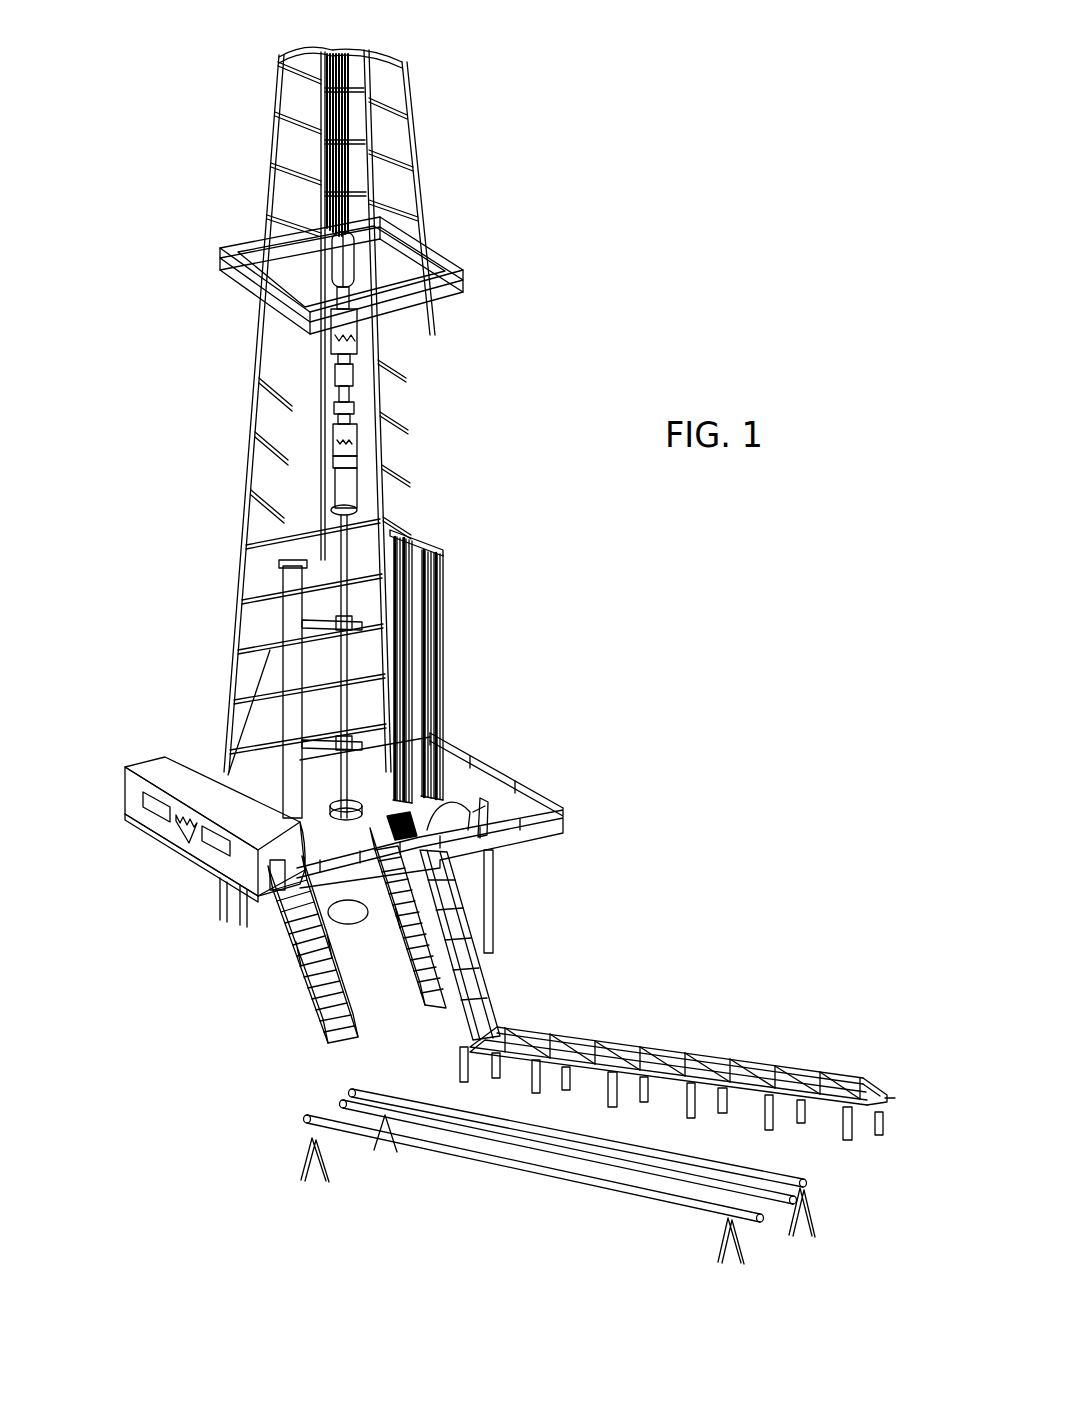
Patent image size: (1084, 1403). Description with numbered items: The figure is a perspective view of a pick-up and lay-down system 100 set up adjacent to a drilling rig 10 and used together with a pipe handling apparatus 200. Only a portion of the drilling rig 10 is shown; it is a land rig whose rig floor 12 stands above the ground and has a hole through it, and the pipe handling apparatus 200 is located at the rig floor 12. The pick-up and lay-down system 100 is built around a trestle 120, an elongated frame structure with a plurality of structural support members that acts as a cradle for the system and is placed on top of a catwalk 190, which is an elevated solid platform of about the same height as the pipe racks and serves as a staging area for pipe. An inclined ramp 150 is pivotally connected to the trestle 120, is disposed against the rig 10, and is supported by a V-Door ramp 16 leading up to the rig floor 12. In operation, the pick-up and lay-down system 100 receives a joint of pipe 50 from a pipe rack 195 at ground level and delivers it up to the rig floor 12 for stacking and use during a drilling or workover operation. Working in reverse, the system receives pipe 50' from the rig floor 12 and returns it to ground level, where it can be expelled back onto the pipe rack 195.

The drilling rig 10 is at (120, 332).
The rig floor 12 is at (467, 780).
The V-Door ramp 16 is at (473, 977).
The joint of pipe 50 is at (555, 1162).
The pipe 50' is at (458, 666).
The pick-up and lay-down system 100 is at (609, 993).
The trestle 120 is at (863, 1083).
The inclined ramp 150 is at (453, 1013).
The catwalk 190 is at (815, 1128).
The pipe rack 195 is at (272, 1132).
The pipe handling apparatus 200 is at (418, 818).